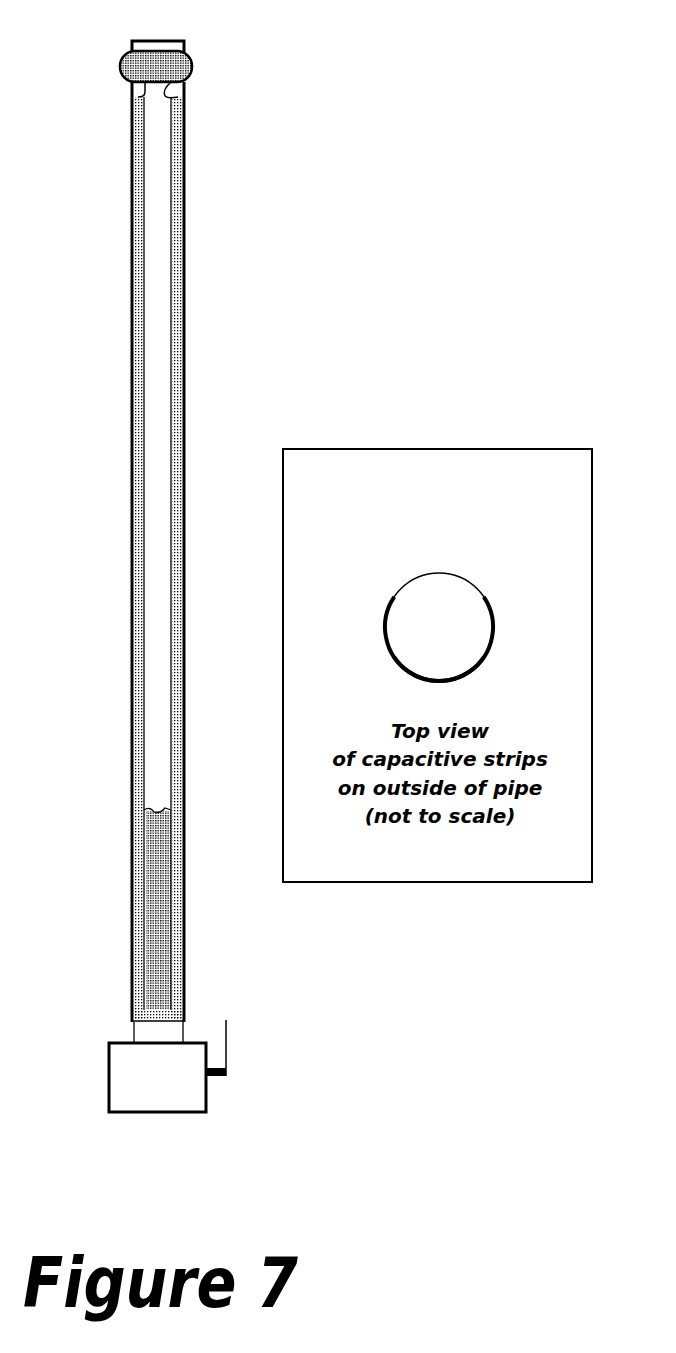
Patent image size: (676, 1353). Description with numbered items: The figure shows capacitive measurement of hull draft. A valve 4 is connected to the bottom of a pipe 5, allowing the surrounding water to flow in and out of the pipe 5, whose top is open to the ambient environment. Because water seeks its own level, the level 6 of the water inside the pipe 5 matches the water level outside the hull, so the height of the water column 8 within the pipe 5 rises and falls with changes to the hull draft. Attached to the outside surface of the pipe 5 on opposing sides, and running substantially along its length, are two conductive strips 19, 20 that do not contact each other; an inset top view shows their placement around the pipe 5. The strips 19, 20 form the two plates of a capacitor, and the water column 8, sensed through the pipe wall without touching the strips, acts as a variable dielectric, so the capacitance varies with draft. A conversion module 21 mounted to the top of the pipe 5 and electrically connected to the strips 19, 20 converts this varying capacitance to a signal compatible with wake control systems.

The valve 4 is at (108, 1060).
The pipe 5 is at (131, 237).
The level 6 is at (150, 808).
The water column 8 is at (147, 925).
The conductive strip 19 is at (136, 472).
The conductive strip 20 is at (180, 438).
The conversion module 21 is at (128, 58).